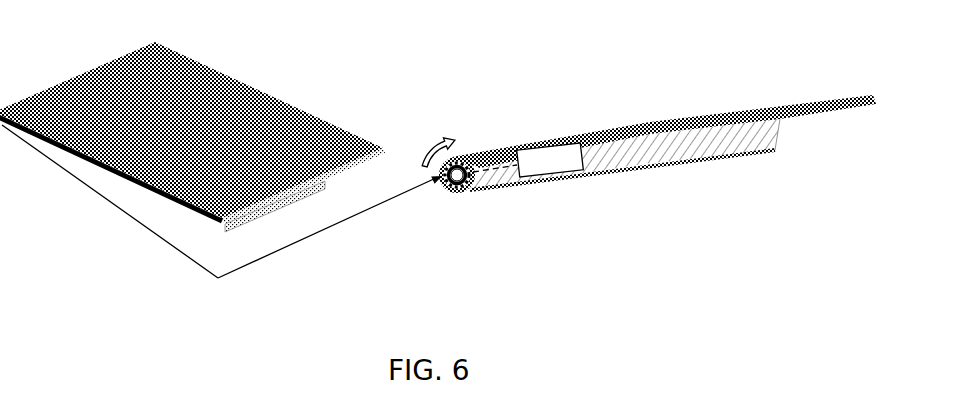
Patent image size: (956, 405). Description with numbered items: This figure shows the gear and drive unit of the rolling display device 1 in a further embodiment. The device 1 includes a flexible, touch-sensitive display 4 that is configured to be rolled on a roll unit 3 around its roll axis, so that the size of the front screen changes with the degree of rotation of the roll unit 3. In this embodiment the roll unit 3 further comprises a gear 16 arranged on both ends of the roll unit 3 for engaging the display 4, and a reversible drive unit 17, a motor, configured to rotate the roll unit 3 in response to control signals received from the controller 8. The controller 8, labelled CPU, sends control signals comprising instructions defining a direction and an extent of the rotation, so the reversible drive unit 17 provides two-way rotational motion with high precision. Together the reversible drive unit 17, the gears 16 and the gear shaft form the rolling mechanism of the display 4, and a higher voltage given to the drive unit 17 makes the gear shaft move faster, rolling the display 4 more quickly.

The rolling display device 1 is at (86, 44).
The flexible, touch-sensitive display 4 is at (200, 139).
The gear 16 is at (223, 229).
The reversible drive unit 17 is at (447, 187).
The roll unit 3 is at (470, 198).
The controller 8 is at (557, 177).